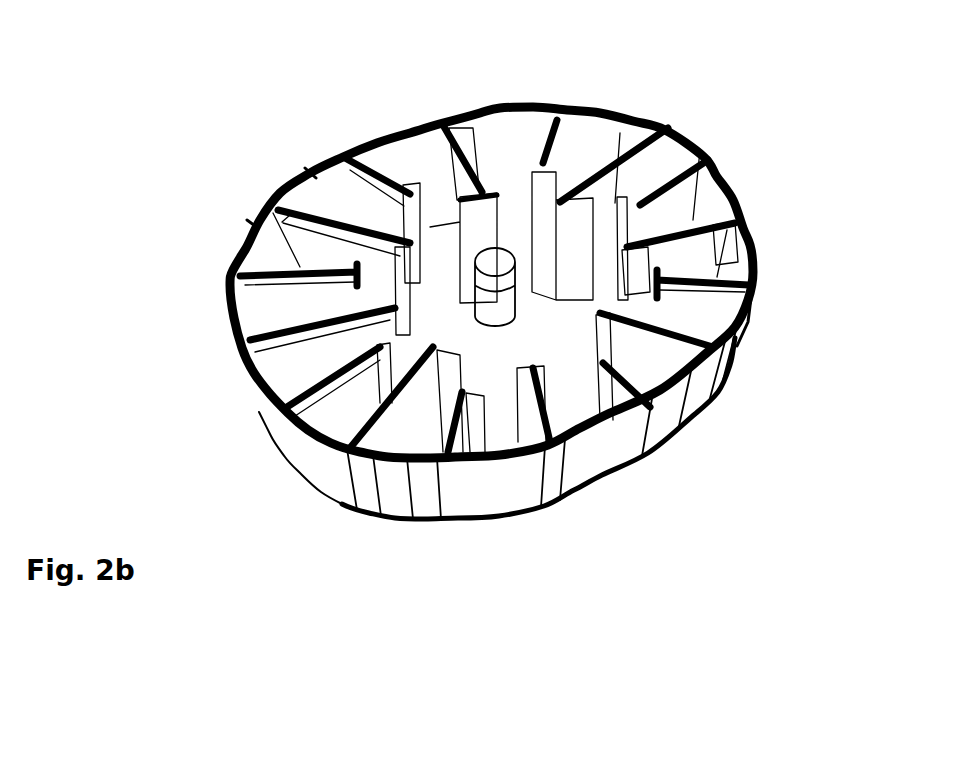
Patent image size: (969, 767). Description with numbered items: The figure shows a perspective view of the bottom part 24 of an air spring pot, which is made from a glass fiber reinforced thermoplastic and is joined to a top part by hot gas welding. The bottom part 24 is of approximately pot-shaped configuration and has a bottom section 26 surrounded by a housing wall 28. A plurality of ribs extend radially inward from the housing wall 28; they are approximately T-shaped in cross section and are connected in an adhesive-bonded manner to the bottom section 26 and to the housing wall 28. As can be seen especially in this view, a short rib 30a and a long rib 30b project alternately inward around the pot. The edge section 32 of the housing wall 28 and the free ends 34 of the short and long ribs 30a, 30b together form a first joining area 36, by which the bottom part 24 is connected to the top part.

The bottom part 24 is at (474, 319).
The bottom section 26 is at (495, 524).
The housing wall 28 is at (723, 363).
The short rib 30a is at (383, 163).
The long rib 30b is at (466, 168).
The edge section 32 is at (605, 107).
The free ends 34 is at (633, 113).
The first joining area 36 is at (338, 223).